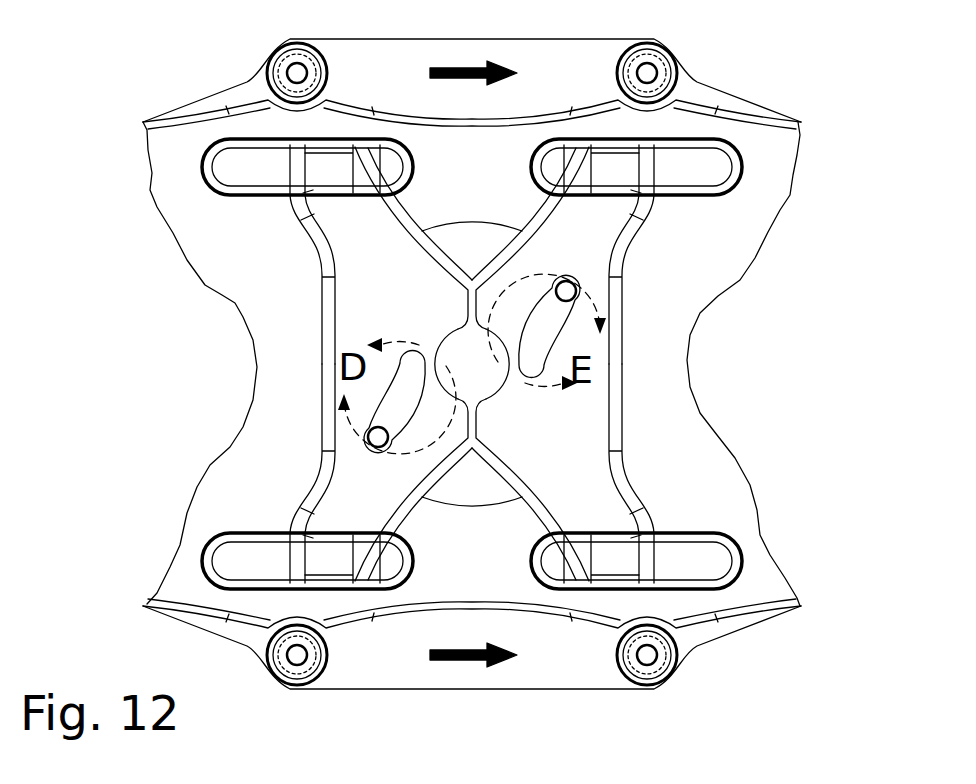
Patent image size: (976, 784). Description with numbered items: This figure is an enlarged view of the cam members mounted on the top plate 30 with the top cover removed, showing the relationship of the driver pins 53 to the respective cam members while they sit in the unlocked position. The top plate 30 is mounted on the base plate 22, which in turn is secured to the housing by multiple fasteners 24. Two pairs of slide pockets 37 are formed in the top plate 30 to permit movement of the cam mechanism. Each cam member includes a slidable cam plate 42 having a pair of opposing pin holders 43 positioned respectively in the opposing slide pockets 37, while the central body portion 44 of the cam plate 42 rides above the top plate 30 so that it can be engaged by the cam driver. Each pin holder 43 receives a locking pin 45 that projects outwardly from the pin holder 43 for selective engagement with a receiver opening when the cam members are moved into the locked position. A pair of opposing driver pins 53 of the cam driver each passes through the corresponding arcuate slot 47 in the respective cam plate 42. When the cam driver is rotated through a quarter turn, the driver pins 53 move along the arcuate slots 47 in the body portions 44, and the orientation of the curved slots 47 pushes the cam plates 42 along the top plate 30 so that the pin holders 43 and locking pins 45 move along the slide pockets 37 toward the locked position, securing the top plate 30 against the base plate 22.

The base plate 22 is at (472, 64).
The fasteners 24 is at (472, 672).
The top plate 30 is at (496, 314).
The slide pockets 37 is at (449, 345).
The cam plate 42 is at (449, 364).
The pin holders 43 is at (443, 364).
The body portion 44 is at (459, 364).
The locking pin 45 is at (461, 327).
The arcuate slot 47 is at (436, 364).
The driver pins 53 is at (477, 366).